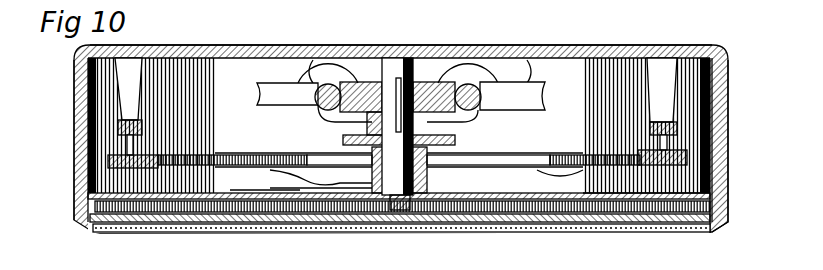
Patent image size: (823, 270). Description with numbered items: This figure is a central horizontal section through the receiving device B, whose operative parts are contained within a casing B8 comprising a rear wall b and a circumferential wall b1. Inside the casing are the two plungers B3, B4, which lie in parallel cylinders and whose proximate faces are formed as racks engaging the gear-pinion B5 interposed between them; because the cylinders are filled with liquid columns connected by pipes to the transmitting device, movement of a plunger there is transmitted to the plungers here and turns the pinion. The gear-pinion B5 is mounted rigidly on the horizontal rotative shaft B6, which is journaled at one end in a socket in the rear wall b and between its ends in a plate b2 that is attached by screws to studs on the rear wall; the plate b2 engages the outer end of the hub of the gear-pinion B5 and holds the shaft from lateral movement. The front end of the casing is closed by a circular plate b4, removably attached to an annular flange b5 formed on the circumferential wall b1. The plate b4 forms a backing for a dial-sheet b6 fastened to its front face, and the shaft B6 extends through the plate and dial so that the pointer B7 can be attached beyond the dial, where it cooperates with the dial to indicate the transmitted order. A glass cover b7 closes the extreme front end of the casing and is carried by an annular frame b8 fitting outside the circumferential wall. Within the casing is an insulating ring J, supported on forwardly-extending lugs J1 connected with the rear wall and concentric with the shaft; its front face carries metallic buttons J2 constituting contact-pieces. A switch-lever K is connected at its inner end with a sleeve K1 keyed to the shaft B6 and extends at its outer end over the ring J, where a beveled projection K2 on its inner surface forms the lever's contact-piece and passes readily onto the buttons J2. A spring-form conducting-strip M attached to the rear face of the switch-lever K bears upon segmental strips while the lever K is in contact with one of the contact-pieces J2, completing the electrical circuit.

The receiving device B is at (401, 139).
The rear wall b is at (572, 44).
The circumferential wall b1 is at (747, 125).
The plate b2 is at (455, 138).
The circular plate b4 is at (503, 198).
The annular flange b5 is at (708, 195).
The dial-sheet b6 is at (520, 203).
The glass cover b7 is at (573, 233).
The annular frame b8 is at (710, 227).
The plunger B3 is at (467, 83).
The plunger B4 is at (330, 90).
The gear-pinion B5 is at (437, 85).
The rotative shaft B6 is at (393, 65).
The pointer B7 is at (330, 210).
The casing B8 is at (742, 90).
The ring J is at (528, 155).
The lugs J1 is at (110, 83).
The metallic buttons J2 is at (548, 172).
The switch-lever K is at (303, 190).
The sleeve K1 is at (427, 176).
The projection K2 is at (290, 172).
The conducting-strip M is at (280, 189).